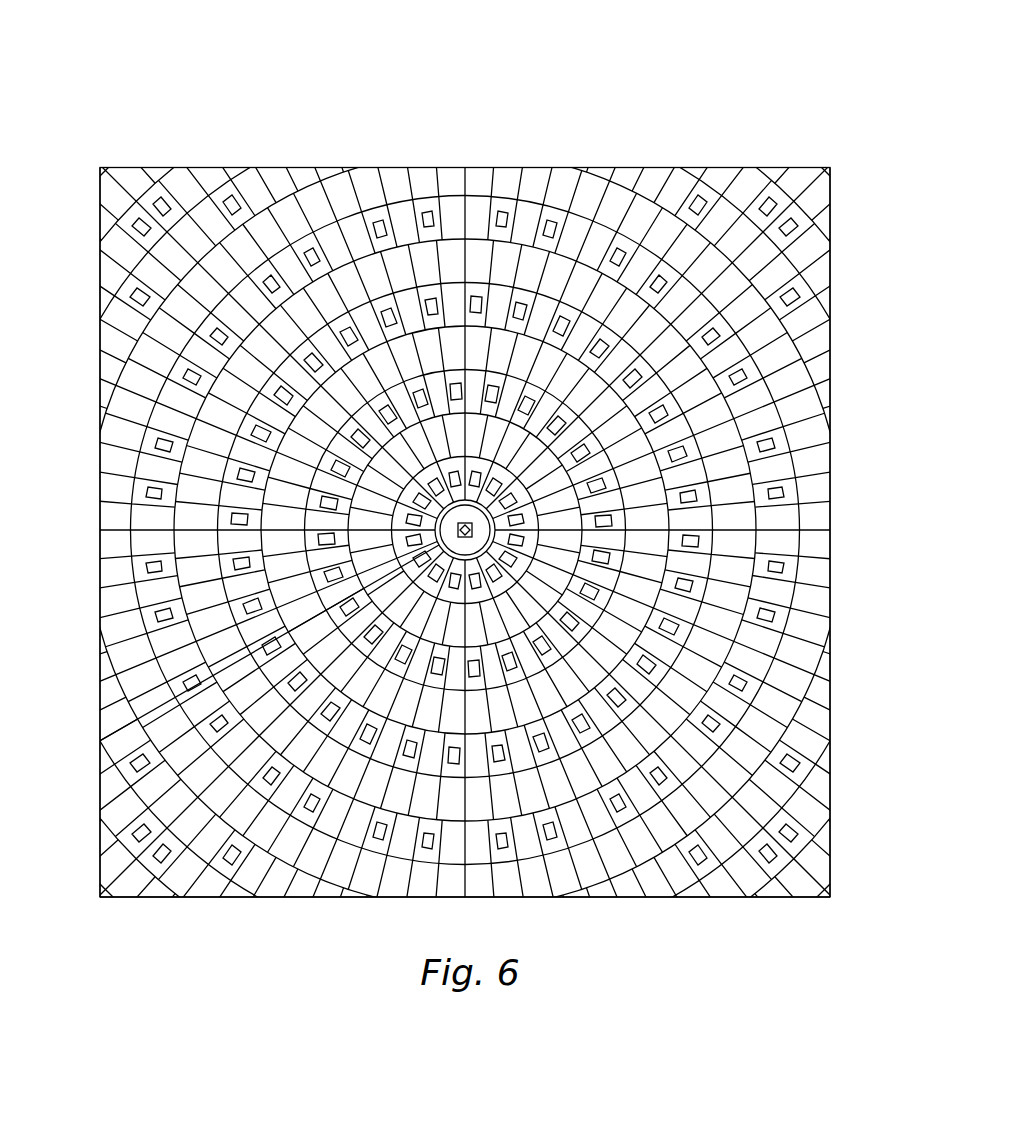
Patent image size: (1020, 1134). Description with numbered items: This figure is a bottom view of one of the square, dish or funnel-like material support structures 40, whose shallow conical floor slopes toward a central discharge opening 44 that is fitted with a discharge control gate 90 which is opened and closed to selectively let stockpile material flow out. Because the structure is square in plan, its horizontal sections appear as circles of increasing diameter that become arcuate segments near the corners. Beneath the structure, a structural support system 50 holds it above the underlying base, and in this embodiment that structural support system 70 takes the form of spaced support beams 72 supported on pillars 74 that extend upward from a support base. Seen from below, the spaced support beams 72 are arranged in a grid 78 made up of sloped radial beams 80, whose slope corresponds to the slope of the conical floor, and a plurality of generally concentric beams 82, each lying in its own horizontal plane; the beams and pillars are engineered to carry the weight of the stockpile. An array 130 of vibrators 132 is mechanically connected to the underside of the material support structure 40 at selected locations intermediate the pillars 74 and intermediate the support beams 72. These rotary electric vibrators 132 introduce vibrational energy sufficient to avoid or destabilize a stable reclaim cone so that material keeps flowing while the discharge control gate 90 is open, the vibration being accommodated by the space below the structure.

The material support structure 40 is at (150, 130).
The discharge opening 44 is at (482, 525).
The structural support system 50 is at (86, 517).
The structural support system 70 is at (84, 597).
The spaced support beams 72 is at (622, 183).
The pillars 74 is at (380, 200).
The grid 78 is at (252, 142).
The sloped radial beams 80 is at (148, 372).
The concentric beams 82 is at (150, 690).
The discharge control gate 90 is at (700, 585).
The array of vibrators 130 is at (846, 278).
The vibrators 132 is at (806, 212).